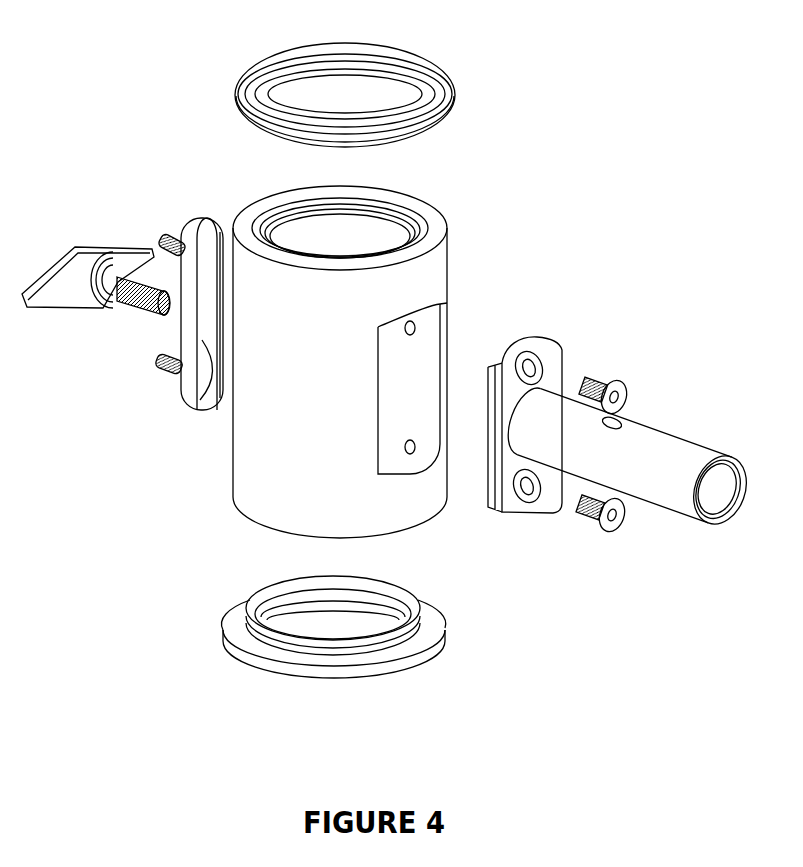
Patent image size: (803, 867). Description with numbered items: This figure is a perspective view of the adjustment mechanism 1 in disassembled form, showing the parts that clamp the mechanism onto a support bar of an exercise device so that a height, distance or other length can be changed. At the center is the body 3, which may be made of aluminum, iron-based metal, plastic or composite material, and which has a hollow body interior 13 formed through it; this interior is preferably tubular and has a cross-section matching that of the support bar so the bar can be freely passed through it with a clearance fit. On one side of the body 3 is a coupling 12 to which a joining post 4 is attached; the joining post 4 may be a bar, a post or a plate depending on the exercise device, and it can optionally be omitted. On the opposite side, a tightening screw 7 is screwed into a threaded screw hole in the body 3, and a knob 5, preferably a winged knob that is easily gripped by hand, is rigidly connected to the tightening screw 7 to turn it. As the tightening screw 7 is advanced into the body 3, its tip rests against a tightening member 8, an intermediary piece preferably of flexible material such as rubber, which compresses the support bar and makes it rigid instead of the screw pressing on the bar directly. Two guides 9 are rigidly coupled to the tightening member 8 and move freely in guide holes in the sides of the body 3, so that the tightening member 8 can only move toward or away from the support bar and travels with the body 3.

The adjustment mechanism 1 is at (525, 195).
The body 3 is at (290, 452).
The joining post 4 is at (630, 463).
The knob 5 is at (67, 270).
The tightening screw 7 is at (130, 295).
The tightening member 8 is at (197, 403).
The guide 9 is at (163, 230).
The coupling 12 is at (553, 377).
The hollow body interior 13 is at (336, 240).